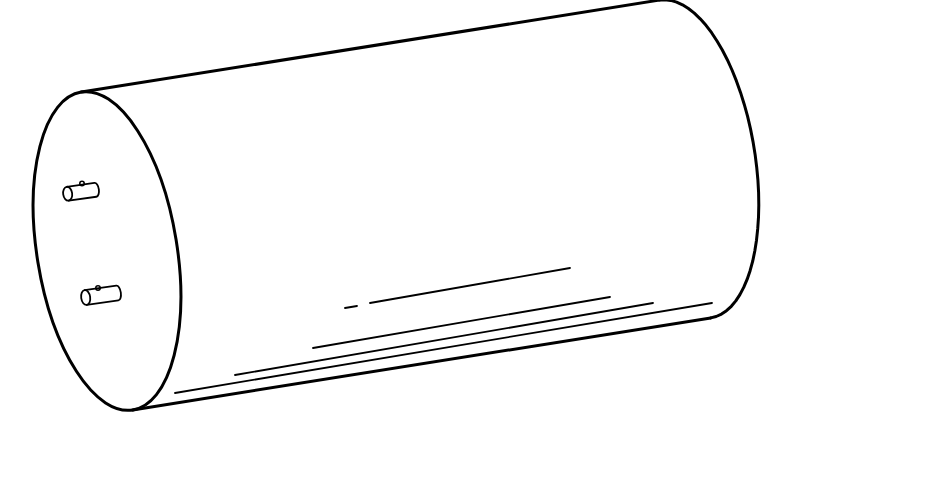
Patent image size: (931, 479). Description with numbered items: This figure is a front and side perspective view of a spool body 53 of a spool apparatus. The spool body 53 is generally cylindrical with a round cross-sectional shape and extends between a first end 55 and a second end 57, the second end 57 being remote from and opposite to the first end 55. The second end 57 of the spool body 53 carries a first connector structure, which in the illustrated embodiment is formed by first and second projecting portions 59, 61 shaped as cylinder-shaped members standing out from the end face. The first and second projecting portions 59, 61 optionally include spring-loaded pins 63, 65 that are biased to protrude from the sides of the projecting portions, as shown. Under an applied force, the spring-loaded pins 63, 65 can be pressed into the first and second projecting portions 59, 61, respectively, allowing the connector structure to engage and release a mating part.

The spool body 53 is at (403, 194).
The first end 55 is at (773, 142).
The second end 57 is at (120, 245).
The first projecting portion 59 is at (93, 183).
The second projecting portion 61 is at (110, 292).
The spring-loaded pin 63 is at (82, 181).
The spring-loaded pin 65 is at (98, 286).